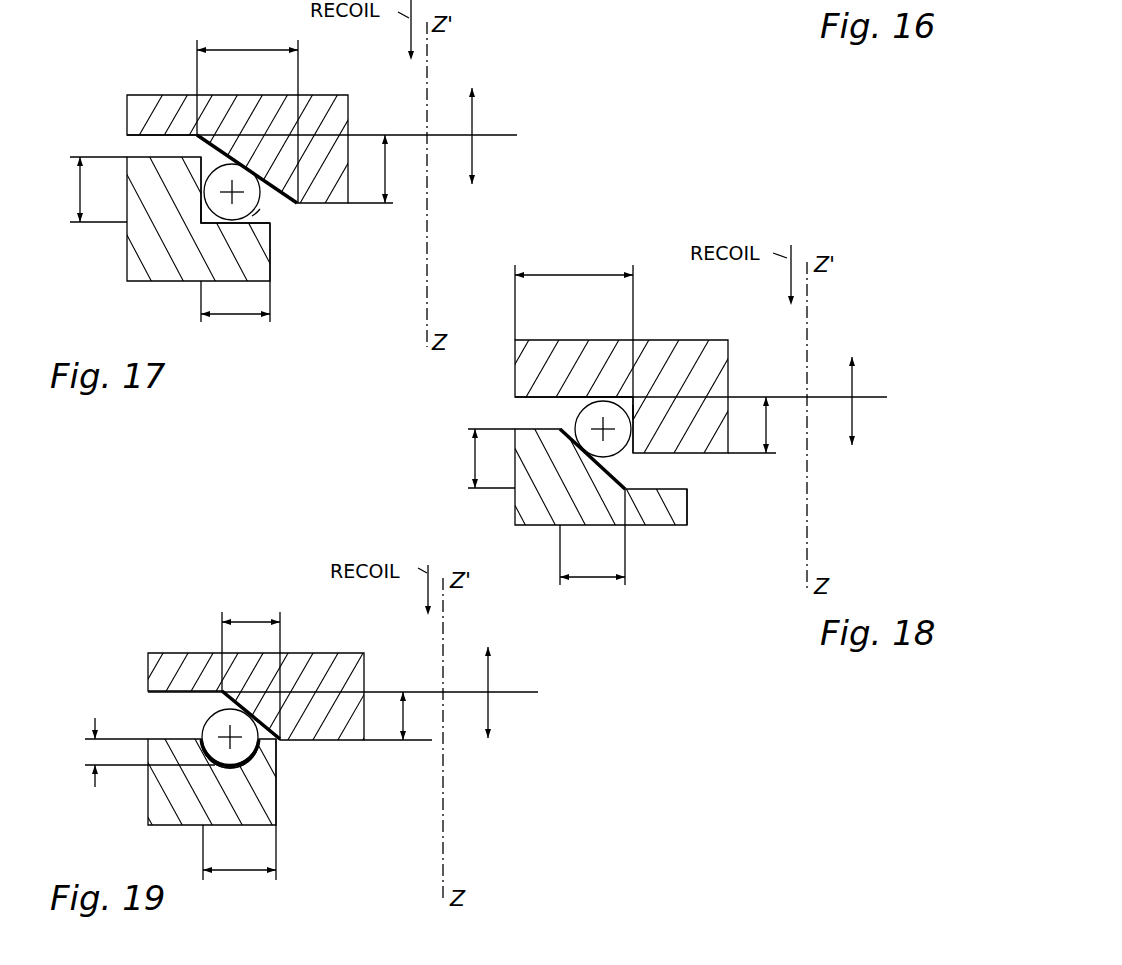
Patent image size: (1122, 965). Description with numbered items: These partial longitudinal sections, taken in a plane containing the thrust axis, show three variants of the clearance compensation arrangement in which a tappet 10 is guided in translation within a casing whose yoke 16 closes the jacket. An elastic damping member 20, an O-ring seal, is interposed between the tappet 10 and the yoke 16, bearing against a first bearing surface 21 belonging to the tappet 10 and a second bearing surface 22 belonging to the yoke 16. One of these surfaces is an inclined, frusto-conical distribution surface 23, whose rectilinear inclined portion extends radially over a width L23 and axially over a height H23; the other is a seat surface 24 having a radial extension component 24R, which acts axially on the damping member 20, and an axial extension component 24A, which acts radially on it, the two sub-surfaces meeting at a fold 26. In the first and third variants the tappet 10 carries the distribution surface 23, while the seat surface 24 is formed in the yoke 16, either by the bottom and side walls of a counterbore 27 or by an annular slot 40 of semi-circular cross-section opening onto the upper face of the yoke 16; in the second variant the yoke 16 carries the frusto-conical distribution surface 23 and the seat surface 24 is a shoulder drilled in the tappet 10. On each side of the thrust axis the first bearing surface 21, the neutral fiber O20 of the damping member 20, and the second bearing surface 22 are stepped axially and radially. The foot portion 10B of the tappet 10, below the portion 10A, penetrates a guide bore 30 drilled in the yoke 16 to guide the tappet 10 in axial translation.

In FIG. 17, the tappet 10 is at (140, 108).
In FIG. 18, the tappet 10 is at (728, 343).
In FIG. 19, the tappet 10 is at (152, 662).
In FIG. 17, the tappet portion 10A is at (474, 122).
In FIG. 18, the tappet portion 10A is at (854, 385).
In FIG. 19, the tappet portion 10A is at (490, 672).
In FIG. 17, the foot portion of the tappet 10B is at (474, 150).
In FIG. 18, the foot portion of the tappet 10B is at (854, 420).
In FIG. 19, the foot portion of the tappet 10B is at (490, 706).
In FIG. 17, the yoke 16 is at (137, 268).
In FIG. 18, the yoke 16 is at (672, 518).
In FIG. 19, the yoke 16 is at (273, 816).
In FIG. 17, the elastic damping member 20 is at (220, 178).
In FIG. 18, the elastic damping member 20 is at (578, 422).
In FIG. 19, the elastic damping member 20 is at (220, 717).
In FIG. 17, the first bearing surface 21 is at (291, 131).
In FIG. 18, the first bearing surface 21 is at (639, 376).
In FIG. 19, the first bearing surface 21 is at (306, 681).
In FIG. 17, the second bearing surface 22 is at (152, 212).
In FIG. 18, the second bearing surface 22 is at (522, 479).
In FIG. 19, the second bearing surface 22 is at (155, 791).
In FIG. 17, the distribution surface 23 is at (291, 131).
In FIG. 18, the distribution surface 23 is at (522, 479).
In FIG. 19, the distribution surface 23 is at (306, 681).
In FIG. 17, the seat surface 24 is at (152, 212).
In FIG. 18, the seat surface 24 is at (639, 376).
In FIG. 19, the seat surface 24 is at (155, 791).
In FIG. 17, the fold 26 is at (202, 224).
In FIG. 18, the fold 26 is at (707, 394).
In FIG. 17, the counterbore 27 is at (296, 241).
In FIG. 17, the guide bore 30 is at (307, 265).
In FIG. 18, the guide bore 30 is at (730, 517).
In FIG. 19, the guide bore 30 is at (319, 793).
In FIG. 19, the slot 40 is at (270, 768).
In FIG. 17, the axial extension component 24A is at (78, 191).
In FIG. 18, the axial extension component 24A is at (772, 430).
In FIG. 19, the axial extension component 24A is at (93, 756).
In FIG. 17, the radial extension component 24R is at (231, 316).
In FIG. 18, the radial extension component 24R is at (578, 272).
In FIG. 19, the radial extension component 24R is at (232, 873).
In FIG. 17, the width of the distribution surface L23 is at (236, 49).
In FIG. 18, the width of the distribution surface L23 is at (591, 580).
In FIG. 19, the width of the distribution surface L23 is at (248, 618).
In FIG. 17, the height of the distribution surface H23 is at (390, 203).
In FIG. 18, the height of the distribution surface H23 is at (469, 458).
In FIG. 19, the height of the distribution surface H23 is at (407, 740).
In FIG. 17, the neutral fiber of the damping member O20 is at (262, 192).
In FIG. 18, the neutral fiber of the damping member O20 is at (606, 434).
In FIG. 19, the neutral fiber of the damping member O20 is at (226, 736).